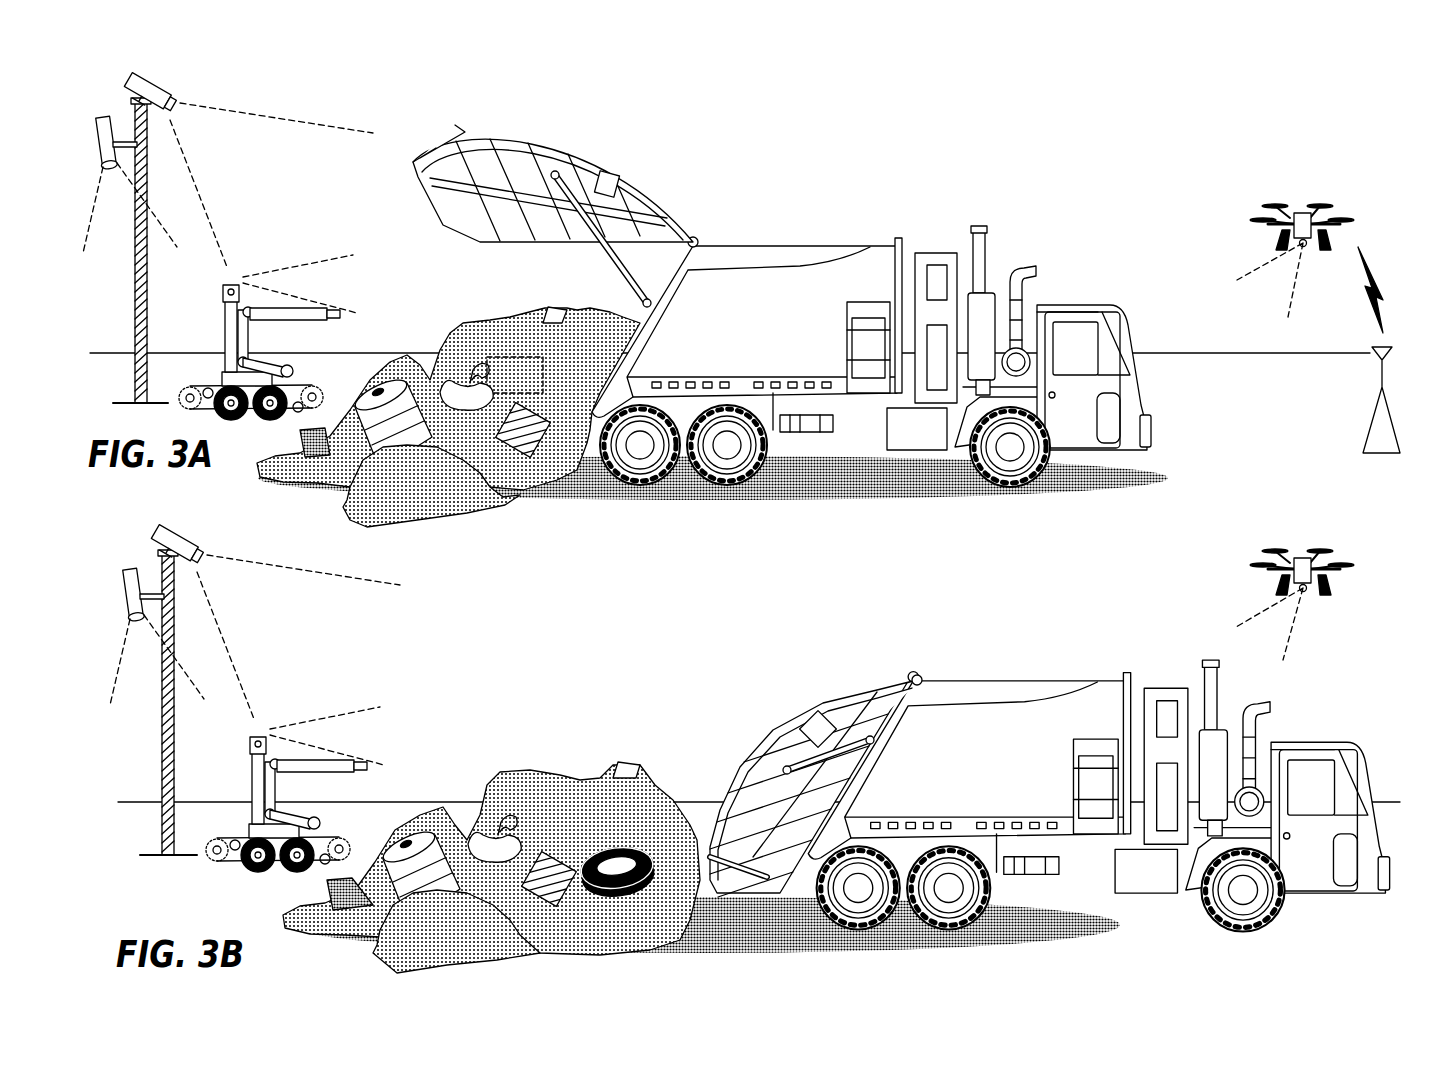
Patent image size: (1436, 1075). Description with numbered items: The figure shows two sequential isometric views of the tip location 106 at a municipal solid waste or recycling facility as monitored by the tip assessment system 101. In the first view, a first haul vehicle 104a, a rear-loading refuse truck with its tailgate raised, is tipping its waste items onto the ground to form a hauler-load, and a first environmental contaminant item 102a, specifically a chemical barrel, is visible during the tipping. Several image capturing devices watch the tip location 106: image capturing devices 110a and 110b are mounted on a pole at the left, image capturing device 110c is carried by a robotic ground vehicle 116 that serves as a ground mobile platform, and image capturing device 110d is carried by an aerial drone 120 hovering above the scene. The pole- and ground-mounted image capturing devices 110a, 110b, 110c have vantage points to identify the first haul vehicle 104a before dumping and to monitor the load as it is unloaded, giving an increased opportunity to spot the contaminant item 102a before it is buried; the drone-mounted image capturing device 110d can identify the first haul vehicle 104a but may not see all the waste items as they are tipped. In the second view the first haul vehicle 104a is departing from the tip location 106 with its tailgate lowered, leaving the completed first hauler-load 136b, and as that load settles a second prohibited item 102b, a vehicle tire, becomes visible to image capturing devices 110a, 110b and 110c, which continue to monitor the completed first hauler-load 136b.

In FIG. 3A, the tip assessment system 101 is at (116, 327).
In FIG. 3B, the tip assessment system 101 is at (129, 779).
In FIG. 3A, the first environmental contaminant item 102a is at (383, 382).
In FIG. 3B, the second prohibited item 102b is at (653, 853).
In FIG. 3A, the first haul vehicle 104a is at (1098, 317).
In FIG. 3B, the first haul vehicle 104a is at (1343, 757).
In FIG. 3A, the tip location 106 is at (905, 505).
In FIG. 3B, the tip location 106 is at (1070, 932).
In FIG. 3A, the image capturing device 110a is at (148, 98).
In FIG. 3B, the image capturing device 110a is at (175, 550).
In FIG. 3A, the image capturing device 110b is at (97, 127).
In FIG. 3B, the image capturing device 110b is at (127, 572).
In FIG. 3A, the image capturing device 110c is at (233, 266).
In FIG. 3B, the image capturing device 110c is at (262, 720).
In FIG. 3A, the image capturing device 110d is at (1305, 247).
In FIG. 3B, the image capturing device 110d is at (1308, 592).
In FIG. 3A, the robotic ground vehicle 116 is at (215, 387).
In FIG. 3B, the robotic ground vehicle 116 is at (242, 839).
In FIG. 3A, the aerial drone 120 is at (1337, 228).
In FIG. 3B, the aerial drone 120 is at (1336, 577).
In FIG. 3A, the completed first hauler-load 136b is at (448, 391).
In FIG. 3B, the completed first hauler-load 136b is at (497, 818).